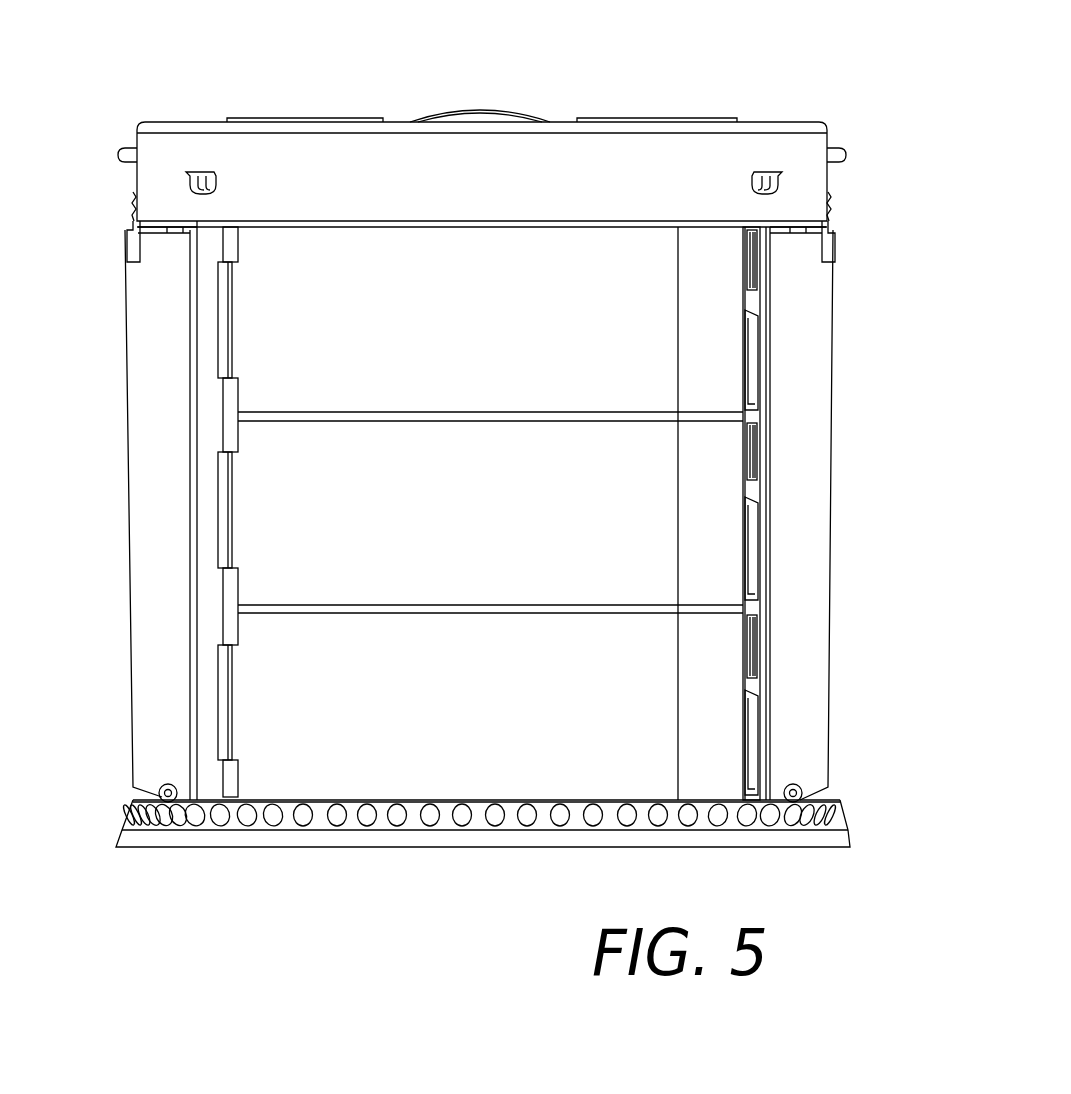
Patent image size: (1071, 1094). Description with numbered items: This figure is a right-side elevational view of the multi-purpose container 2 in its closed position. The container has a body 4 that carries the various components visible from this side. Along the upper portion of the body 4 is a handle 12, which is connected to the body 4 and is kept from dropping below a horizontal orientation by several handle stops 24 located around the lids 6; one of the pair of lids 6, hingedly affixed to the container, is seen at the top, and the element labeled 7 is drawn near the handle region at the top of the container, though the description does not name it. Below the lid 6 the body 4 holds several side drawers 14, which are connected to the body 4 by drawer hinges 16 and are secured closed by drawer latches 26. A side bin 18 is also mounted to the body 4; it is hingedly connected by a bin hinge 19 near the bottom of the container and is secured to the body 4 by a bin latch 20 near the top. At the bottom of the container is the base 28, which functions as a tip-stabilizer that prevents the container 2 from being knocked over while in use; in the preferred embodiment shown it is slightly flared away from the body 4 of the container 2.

The multi-purpose container 2 is at (158, 56).
The body 4 is at (205, 617).
The lid 6 is at (624, 96).
The handle 7 is at (458, 116).
The handle 12 is at (843, 152).
The side drawer 14 is at (511, 338).
The drawer hinge 16 is at (220, 485).
The side bin 18 is at (148, 418).
The bin hinge 19 is at (165, 790).
The bin latch 20 is at (132, 214).
The handle stop 24 is at (213, 182).
The drawer latch 26 is at (747, 259).
The base 28 is at (818, 812).